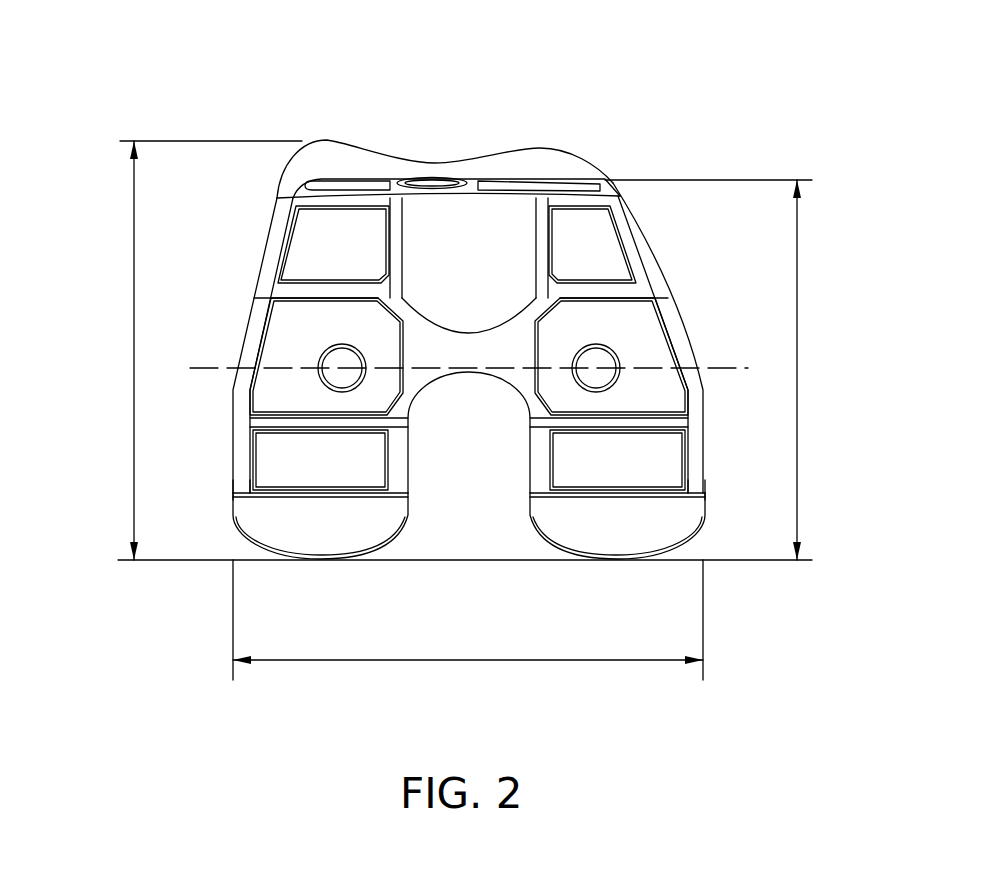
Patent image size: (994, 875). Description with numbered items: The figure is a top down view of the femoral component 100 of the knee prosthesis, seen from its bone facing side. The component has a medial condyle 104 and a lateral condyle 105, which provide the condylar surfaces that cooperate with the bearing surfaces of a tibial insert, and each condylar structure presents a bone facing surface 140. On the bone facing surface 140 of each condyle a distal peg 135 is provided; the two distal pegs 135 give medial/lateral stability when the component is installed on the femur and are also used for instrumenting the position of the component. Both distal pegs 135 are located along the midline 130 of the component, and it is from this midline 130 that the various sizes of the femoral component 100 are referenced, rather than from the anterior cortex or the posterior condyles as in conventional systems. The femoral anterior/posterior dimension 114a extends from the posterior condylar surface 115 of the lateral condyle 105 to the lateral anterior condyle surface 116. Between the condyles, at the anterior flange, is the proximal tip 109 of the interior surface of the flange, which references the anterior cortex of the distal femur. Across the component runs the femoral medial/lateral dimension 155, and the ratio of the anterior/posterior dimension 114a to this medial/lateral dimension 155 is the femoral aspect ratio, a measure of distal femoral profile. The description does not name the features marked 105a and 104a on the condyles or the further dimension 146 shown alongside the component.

The femoral component 100 is at (601, 104).
The lateral anterior condyle surface 116 is at (330, 127).
The proximal tip 109 is at (455, 165).
The distal pegs 135 is at (331, 356).
The midline 130 is at (223, 368).
The bone facing surface 140 is at (282, 400).
The edge of left leg 105a is at (217, 507).
The edge of right leg 104a is at (719, 507).
The lateral condyle 105 is at (360, 522).
The medial condyle 104 is at (660, 522).
The posterior condylar surface 115 is at (325, 578).
The femoral anterior/posterior dimension 114a is at (136, 312).
The body height 146 is at (797, 325).
The femoral medial/lateral dimension 155 is at (437, 660).